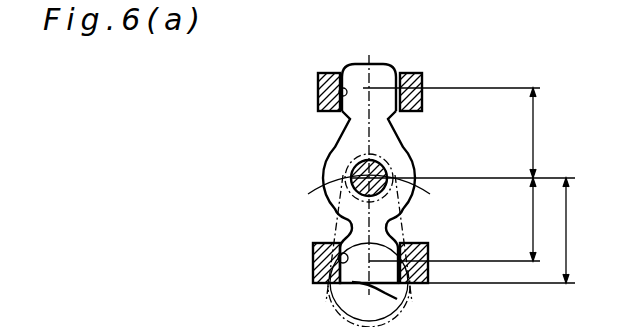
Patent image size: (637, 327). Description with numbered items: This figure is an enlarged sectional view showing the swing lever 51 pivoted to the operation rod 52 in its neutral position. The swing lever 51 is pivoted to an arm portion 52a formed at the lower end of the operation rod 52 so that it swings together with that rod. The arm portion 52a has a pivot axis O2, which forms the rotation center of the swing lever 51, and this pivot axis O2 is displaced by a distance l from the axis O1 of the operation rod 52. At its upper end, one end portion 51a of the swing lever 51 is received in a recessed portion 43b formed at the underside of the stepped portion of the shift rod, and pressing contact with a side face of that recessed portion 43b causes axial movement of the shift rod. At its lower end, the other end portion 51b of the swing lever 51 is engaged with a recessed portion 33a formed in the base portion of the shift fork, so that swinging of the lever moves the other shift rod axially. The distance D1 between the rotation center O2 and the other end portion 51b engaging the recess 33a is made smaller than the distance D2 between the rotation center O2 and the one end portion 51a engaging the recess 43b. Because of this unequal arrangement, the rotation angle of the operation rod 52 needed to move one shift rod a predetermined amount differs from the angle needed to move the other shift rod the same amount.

The swing lever 51 is at (333, 149).
The one end portion of swing lever 51a is at (384, 66).
The other end portion of swing lever 51b is at (335, 299).
The recessed portion of shift rod 43b is at (338, 93).
The recessed portion of shift fork 33a is at (340, 257).
The operation rod 52 is at (340, 225).
The arm portion of operation rod 52a is at (346, 173).
The axis of operation rod O1 is at (401, 300).
The pivot axis of arm portion O2 is at (396, 159).
The distance between rotation center and other end portion D1 is at (454, 219).
The distance between rotation center and one end portion D2 is at (451, 133).
The distance between pivot axis and operation rod axis l is at (504, 230).